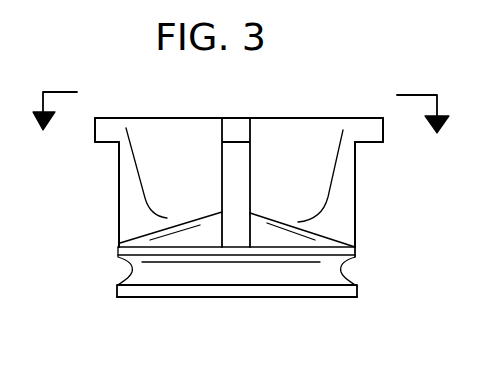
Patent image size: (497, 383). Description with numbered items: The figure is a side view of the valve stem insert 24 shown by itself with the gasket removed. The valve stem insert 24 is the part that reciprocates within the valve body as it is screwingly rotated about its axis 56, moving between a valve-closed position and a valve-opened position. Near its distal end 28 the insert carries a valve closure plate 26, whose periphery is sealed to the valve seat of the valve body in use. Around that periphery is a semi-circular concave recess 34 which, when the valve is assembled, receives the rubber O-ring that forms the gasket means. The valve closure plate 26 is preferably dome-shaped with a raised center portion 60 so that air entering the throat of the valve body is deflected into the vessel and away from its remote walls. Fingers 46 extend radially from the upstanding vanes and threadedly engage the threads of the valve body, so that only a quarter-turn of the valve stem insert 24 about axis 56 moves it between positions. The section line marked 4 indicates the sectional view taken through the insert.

The section line 4- 4 is at (241, 123).
The valve stem insert 24 is at (372, 191).
The valve closure plate 26 is at (348, 250).
The distal end 28 is at (230, 297).
The semi-circular concave recess 34 is at (160, 277).
The fingers 46 is at (97, 128).
The axis 56 is at (237, 107).
The raised center portion 60 is at (222, 213).